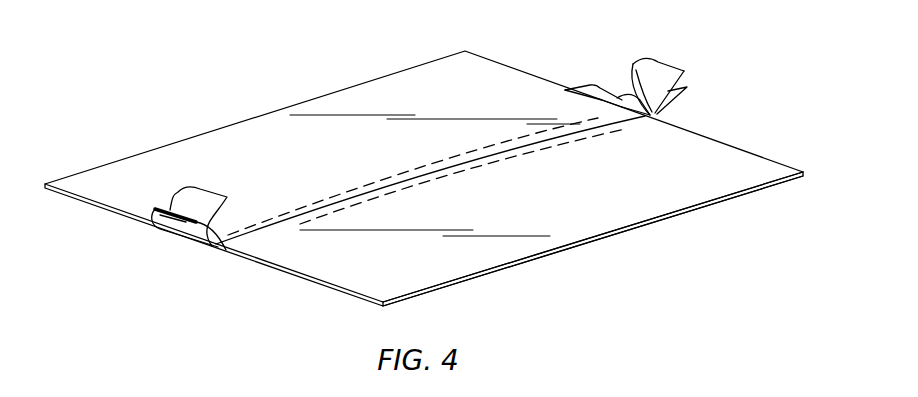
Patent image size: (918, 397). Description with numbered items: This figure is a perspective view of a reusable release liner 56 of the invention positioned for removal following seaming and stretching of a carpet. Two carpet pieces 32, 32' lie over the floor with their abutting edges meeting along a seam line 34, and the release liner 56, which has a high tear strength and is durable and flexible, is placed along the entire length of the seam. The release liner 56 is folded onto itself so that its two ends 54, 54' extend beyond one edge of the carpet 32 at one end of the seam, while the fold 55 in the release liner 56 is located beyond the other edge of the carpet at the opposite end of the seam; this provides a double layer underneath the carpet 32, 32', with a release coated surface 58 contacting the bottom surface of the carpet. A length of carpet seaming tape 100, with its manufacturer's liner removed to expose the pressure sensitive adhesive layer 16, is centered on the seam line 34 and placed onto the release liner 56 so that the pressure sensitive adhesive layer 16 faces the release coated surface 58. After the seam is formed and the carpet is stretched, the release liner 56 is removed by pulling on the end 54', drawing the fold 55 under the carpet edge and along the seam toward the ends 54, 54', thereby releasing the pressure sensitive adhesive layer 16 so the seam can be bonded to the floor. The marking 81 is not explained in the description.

The pressure sensitive adhesive layer 16 is at (190, 197).
The carpet 32 is at (424, 178).
The carpet 32' is at (551, 238).
The seam line 34 is at (474, 163).
The end 54 is at (679, 75).
The end 54' is at (700, 104).
The fold 55 is at (152, 207).
The release liner 56 is at (158, 236).
The release coated surface 58 is at (647, 85).
The inner clamp edge 81 is at (150, 223).
The carpet seaming tape 100 is at (191, 209).